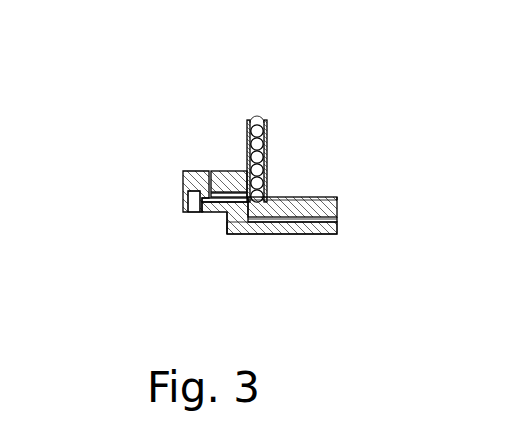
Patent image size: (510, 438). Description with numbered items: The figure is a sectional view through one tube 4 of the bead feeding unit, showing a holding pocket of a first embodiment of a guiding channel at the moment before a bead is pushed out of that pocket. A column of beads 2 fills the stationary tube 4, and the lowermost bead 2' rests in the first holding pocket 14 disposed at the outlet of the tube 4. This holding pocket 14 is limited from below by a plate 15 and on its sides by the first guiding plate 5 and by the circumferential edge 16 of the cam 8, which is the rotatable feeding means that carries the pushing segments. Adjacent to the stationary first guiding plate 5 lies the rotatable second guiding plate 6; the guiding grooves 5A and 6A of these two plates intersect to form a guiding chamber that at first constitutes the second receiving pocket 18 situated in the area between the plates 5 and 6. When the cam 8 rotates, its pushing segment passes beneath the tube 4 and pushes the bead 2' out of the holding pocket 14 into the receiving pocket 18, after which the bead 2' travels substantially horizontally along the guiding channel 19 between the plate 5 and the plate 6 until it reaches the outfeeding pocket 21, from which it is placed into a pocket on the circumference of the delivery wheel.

The bead 2 is at (281, 112).
The lowermost bead 2' is at (303, 146).
The tube 4 is at (250, 123).
The first guiding plate 5 is at (232, 172).
The guiding groove 5A is at (222, 193).
The second guiding plate 6 is at (183, 177).
The guiding groove 6A is at (221, 202).
The cam 8 is at (338, 198).
The first holding pocket 14 is at (284, 235).
The plate 15 is at (339, 216).
The circumferential edge 16 is at (272, 196).
The second receiving pocket 18 is at (243, 216).
The guiding channel 19 is at (228, 212).
The outfeeding pocket 21 is at (186, 209).